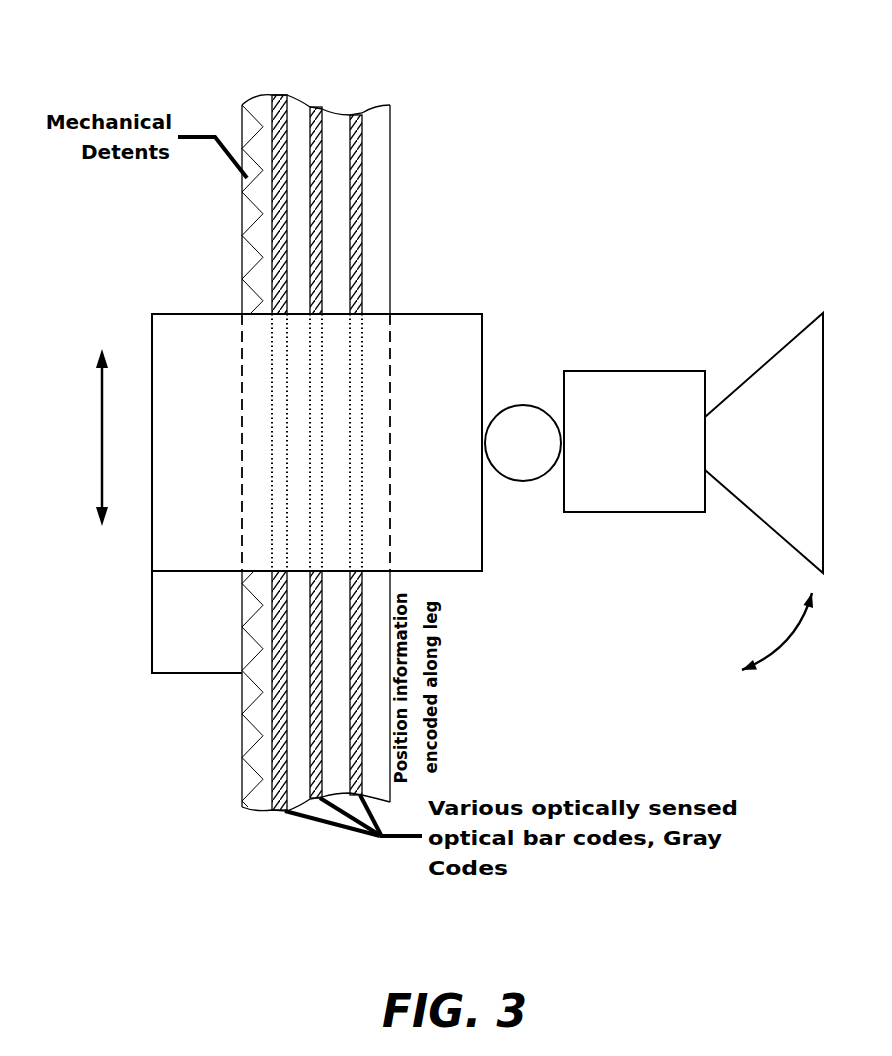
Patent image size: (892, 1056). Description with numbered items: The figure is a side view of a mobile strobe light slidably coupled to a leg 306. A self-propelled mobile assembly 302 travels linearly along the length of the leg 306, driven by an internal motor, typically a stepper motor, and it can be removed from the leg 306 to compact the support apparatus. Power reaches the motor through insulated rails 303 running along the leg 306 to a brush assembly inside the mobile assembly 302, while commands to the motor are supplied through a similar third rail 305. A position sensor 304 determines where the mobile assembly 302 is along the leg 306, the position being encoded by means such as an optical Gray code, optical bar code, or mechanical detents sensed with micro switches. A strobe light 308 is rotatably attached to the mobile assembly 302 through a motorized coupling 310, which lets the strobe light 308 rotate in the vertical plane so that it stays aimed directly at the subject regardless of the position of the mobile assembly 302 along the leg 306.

The self-propelled mobile assembly 302 is at (182, 314).
The insulated rails 303 is at (277, 95).
The position sensor 304 is at (175, 673).
The third rail 305 is at (355, 113).
The leg 306 is at (390, 178).
The strobe light 308 is at (678, 512).
The coupling 310 is at (523, 405).